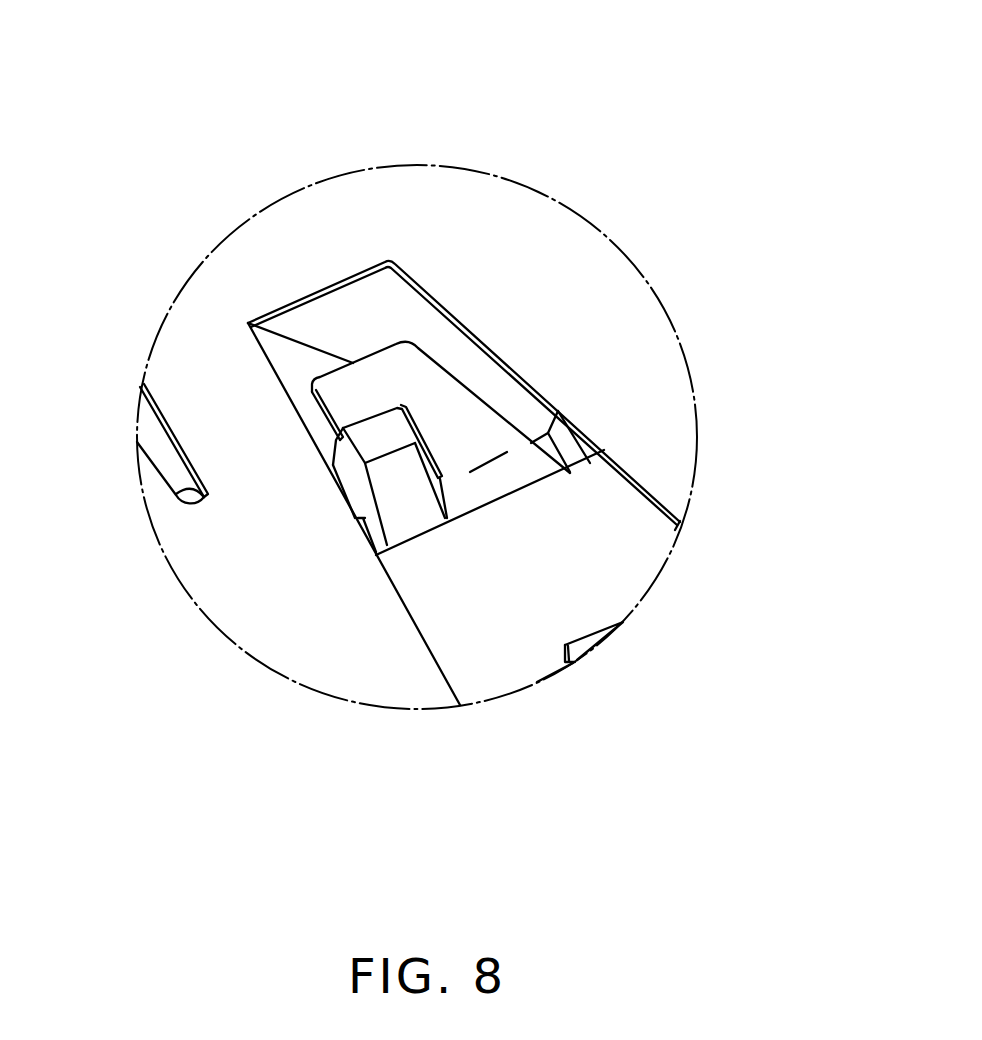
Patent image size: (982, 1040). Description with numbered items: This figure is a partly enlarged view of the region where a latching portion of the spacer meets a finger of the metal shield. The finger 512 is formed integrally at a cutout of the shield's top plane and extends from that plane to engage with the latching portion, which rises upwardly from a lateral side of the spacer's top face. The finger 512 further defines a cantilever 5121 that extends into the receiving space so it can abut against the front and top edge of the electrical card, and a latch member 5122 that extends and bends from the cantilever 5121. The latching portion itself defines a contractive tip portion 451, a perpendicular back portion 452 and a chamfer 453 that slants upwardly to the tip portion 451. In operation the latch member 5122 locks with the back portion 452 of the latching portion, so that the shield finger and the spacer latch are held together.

The finger 512 is at (453, 408).
The cantilever 5121 is at (502, 478).
The latch member 5122 is at (365, 389).
The tip portion 451 is at (370, 473).
The back portion 452 is at (338, 443).
The chamfer 453 is at (415, 490).